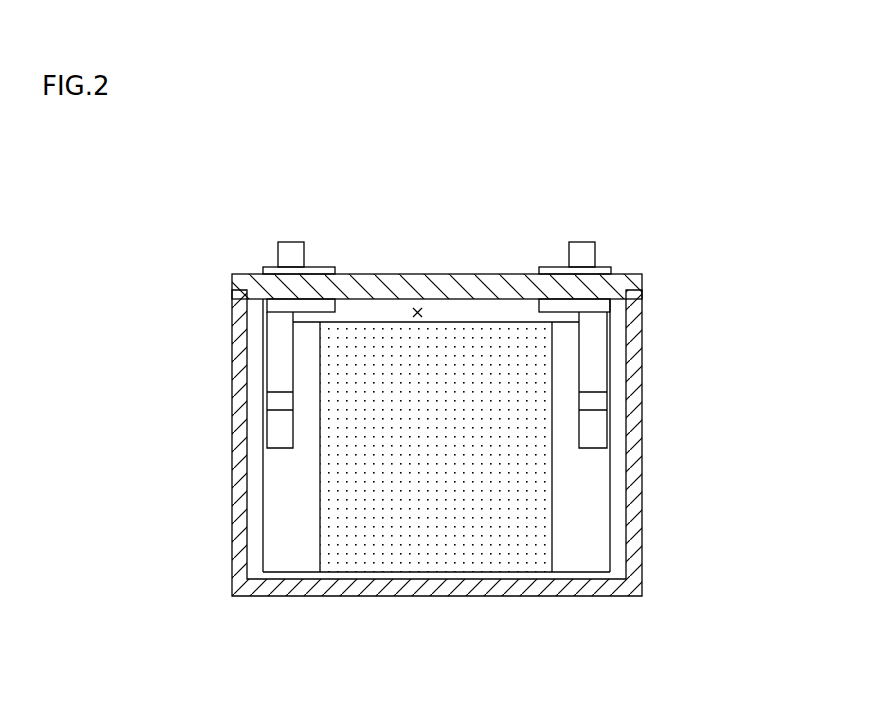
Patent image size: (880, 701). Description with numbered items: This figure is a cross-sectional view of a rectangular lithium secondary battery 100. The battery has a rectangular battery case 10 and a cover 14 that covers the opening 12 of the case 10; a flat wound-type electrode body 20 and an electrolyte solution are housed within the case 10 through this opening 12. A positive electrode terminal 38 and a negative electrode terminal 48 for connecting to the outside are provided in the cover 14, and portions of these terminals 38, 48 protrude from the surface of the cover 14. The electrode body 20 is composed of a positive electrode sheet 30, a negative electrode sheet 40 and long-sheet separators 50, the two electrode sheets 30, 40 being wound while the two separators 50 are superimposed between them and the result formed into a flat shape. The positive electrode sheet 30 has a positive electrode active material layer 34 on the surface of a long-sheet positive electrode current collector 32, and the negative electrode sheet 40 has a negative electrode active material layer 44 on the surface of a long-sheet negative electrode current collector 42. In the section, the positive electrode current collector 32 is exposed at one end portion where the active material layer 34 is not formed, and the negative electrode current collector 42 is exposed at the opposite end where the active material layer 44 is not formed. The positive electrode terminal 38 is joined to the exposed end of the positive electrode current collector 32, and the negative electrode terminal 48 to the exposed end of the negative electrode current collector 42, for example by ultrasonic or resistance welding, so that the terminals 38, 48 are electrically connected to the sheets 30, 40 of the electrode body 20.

The lithium secondary battery 100 is at (202, 156).
The battery case 10 is at (652, 545).
The opening 12 is at (420, 306).
The cover 14 is at (379, 262).
The wound-type electrode body 20 is at (443, 446).
The positive electrode sheet 30 is at (331, 489).
The positive electrode current collector 32 is at (291, 562).
The positive electrode active material layer 34 is at (382, 538).
The positive electrode terminal 38 is at (290, 250).
The negative electrode sheet 40 is at (547, 483).
The negative electrode current collector 42 is at (575, 564).
The negative electrode active material layer 44 is at (520, 537).
The negative electrode terminal 48 is at (582, 248).
The separator 50 is at (447, 558).